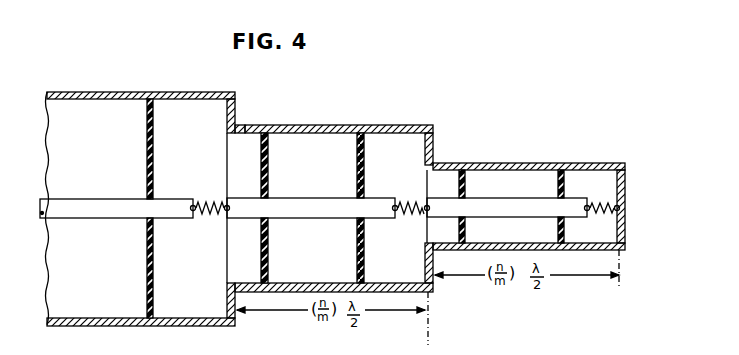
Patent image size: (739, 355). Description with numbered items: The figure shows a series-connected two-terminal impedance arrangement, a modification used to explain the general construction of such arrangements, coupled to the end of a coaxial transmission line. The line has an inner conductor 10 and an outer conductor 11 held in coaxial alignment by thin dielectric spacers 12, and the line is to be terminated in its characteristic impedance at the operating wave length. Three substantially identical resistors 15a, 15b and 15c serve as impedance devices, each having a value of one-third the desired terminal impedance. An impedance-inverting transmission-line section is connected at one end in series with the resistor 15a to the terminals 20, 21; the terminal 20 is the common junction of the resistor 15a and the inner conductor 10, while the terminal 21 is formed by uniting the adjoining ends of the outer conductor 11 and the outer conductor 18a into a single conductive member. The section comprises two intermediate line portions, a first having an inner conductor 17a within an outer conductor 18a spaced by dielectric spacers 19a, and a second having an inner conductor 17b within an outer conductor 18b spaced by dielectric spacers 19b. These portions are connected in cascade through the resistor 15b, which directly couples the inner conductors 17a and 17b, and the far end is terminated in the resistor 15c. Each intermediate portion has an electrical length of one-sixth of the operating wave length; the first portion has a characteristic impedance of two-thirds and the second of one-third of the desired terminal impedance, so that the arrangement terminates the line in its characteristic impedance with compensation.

The inner conductor 10 is at (113, 199).
The outer conductor 11 is at (145, 92).
The dielectric spacers 12 is at (146, 124).
The resistor 15a is at (210, 202).
The resistor 15b is at (406, 200).
The resistor 15c is at (606, 198).
The inner conductor 17a is at (309, 218).
The inner conductor 17b is at (516, 218).
The outer conductor 18a is at (334, 125).
The outer conductor 18b is at (529, 163).
The dielectric spacers 19a is at (268, 167).
The dielectric spacers 19b is at (466, 196).
The terminal 20 is at (203, 213).
The terminal 21 is at (237, 128).